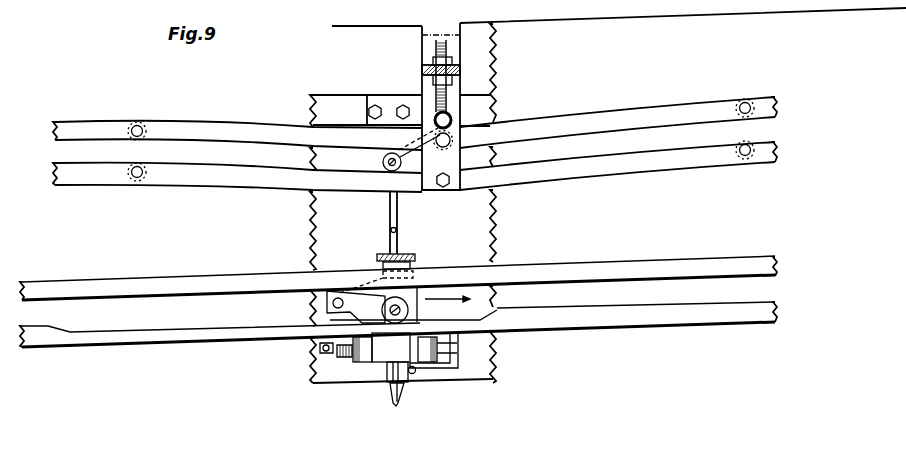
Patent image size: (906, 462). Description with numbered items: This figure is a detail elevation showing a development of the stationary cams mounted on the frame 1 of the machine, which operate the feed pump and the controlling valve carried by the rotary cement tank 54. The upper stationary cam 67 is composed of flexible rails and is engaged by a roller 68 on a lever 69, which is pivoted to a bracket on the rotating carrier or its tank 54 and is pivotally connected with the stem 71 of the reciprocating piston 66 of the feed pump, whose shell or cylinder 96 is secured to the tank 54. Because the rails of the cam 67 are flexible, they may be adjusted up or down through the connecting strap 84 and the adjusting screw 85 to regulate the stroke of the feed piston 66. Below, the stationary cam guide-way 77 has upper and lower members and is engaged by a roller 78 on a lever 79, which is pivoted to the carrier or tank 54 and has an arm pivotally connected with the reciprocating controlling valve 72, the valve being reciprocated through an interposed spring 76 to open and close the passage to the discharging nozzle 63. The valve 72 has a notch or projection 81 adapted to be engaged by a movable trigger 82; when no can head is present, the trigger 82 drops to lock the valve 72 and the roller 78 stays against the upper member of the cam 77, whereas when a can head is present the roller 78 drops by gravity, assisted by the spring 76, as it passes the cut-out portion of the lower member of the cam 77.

The frame 1 is at (461, 46).
The adjusting screw 85 is at (436, 54).
The connecting strap 84 is at (411, 91).
The stationary cam 67 is at (117, 133).
The roller 68 is at (382, 162).
The lever 69 is at (415, 191).
The stem 71 is at (390, 218).
The piston 66 is at (400, 249).
The roller 78 is at (398, 299).
The tank 54 is at (488, 228).
The stationary cam 77 is at (212, 303).
The lever 79 is at (332, 312).
The shell or cylinder 96 is at (447, 309).
The notch or projection 81 is at (450, 338).
The controlling valve 72 is at (318, 351).
The spring 76 is at (347, 360).
The trigger 82 is at (454, 368).
The nozzle 63 is at (400, 404).